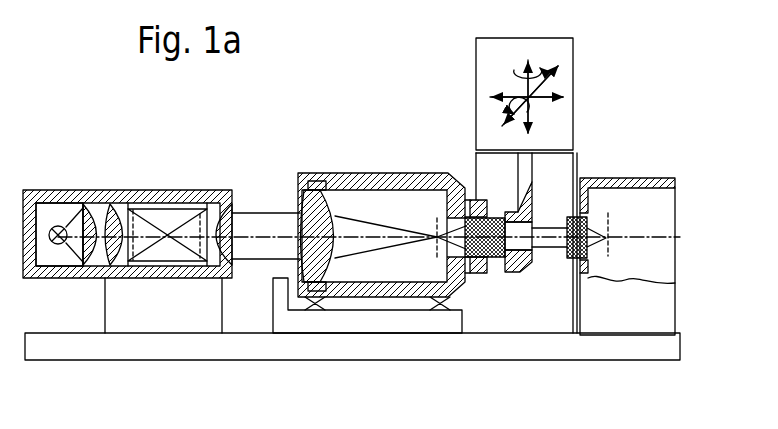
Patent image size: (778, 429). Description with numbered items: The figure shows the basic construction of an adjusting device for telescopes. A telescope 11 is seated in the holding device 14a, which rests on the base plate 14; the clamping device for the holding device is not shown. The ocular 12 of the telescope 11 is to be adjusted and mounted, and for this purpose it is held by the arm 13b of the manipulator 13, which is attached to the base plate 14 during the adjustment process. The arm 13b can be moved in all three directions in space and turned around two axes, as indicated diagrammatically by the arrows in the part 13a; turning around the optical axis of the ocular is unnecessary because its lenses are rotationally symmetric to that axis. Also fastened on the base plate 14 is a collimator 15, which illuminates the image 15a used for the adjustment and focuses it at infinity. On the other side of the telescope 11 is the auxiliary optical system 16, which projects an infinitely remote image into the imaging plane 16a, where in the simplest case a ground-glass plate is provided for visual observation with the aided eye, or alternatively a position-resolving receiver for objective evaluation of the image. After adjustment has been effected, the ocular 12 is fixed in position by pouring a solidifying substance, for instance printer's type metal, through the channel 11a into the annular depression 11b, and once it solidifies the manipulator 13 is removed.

The telescope 11 is at (372, 165).
The channel 11a is at (470, 200).
The annular depression 11b is at (475, 278).
The ocular 12 is at (495, 283).
The manipulator 13 is at (456, 106).
The part of the manipulator 13a is at (565, 50).
The arm 13b is at (528, 250).
The base plate 14 is at (390, 350).
The holding device 14a is at (323, 322).
The collimator 15 is at (75, 185).
The image 15a is at (134, 224).
The auxiliary optical system 16 is at (583, 265).
The imaging plane 16a is at (608, 222).